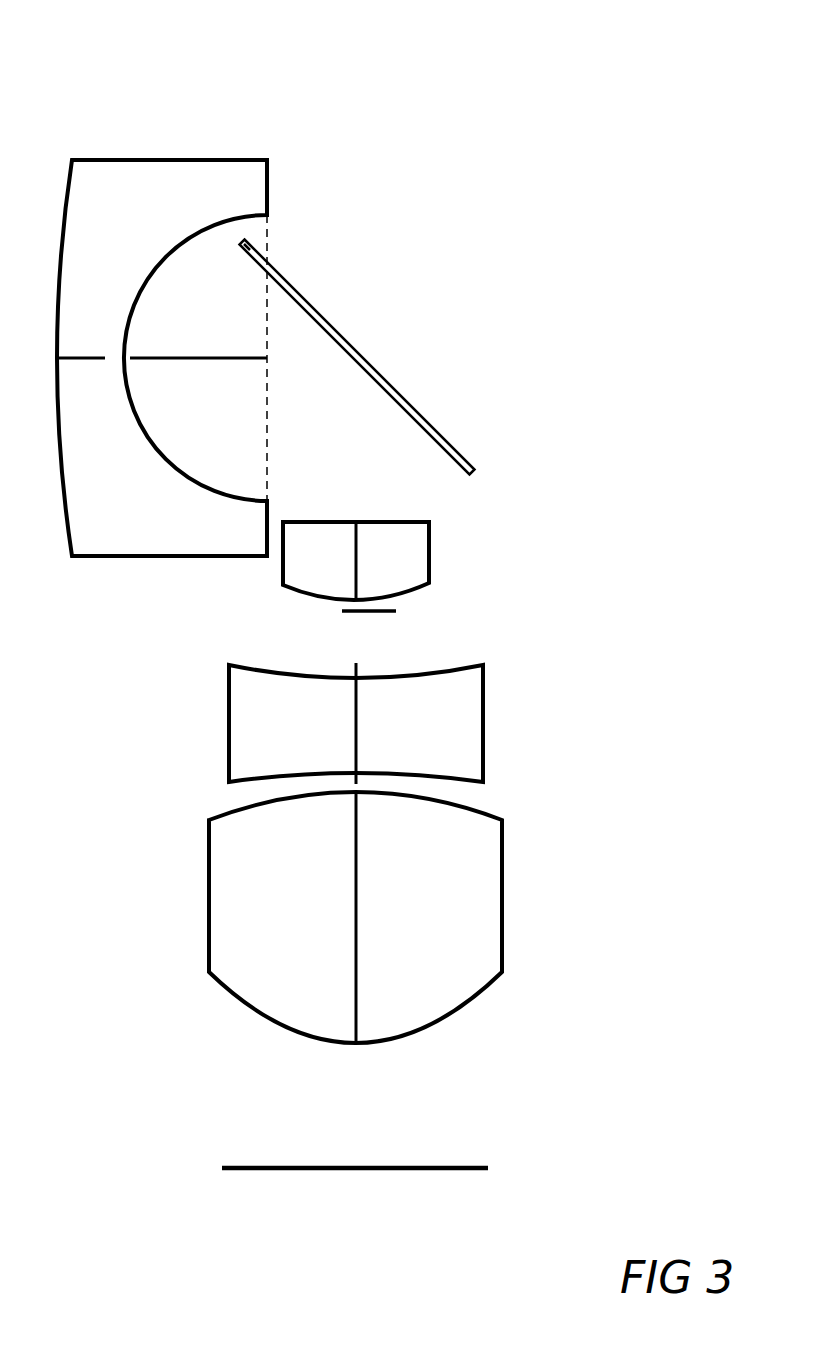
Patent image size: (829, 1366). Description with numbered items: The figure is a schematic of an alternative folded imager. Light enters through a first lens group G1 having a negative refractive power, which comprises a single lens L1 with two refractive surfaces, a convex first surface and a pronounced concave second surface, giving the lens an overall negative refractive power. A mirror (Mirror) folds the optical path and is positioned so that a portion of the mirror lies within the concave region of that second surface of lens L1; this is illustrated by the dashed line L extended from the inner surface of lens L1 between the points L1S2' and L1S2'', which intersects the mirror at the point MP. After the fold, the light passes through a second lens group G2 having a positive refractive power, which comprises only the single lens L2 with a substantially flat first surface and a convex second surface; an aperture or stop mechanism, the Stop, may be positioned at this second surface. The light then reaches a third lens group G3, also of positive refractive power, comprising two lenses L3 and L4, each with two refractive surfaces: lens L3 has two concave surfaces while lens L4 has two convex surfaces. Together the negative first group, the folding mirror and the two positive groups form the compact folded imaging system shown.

The first lens group G1 is at (78, 95).
The second lens group G2 is at (641, 510).
The third lens group G3 is at (640, 654).
The lens L1 is at (162, 358).
The lens L2 is at (356, 560).
The lens L3 is at (356, 723).
The lens L4 is at (355, 917).
The point on inner surface of lens L1 L1S2' is at (295, 187).
The point on inner surface of lens L1 L1S2'' is at (234, 528).
The line L is at (276, 358).
The intersection point MP is at (274, 255).
The mirror Mirror is at (357, 357).
The aperture or stop mechanism Stop is at (395, 614).